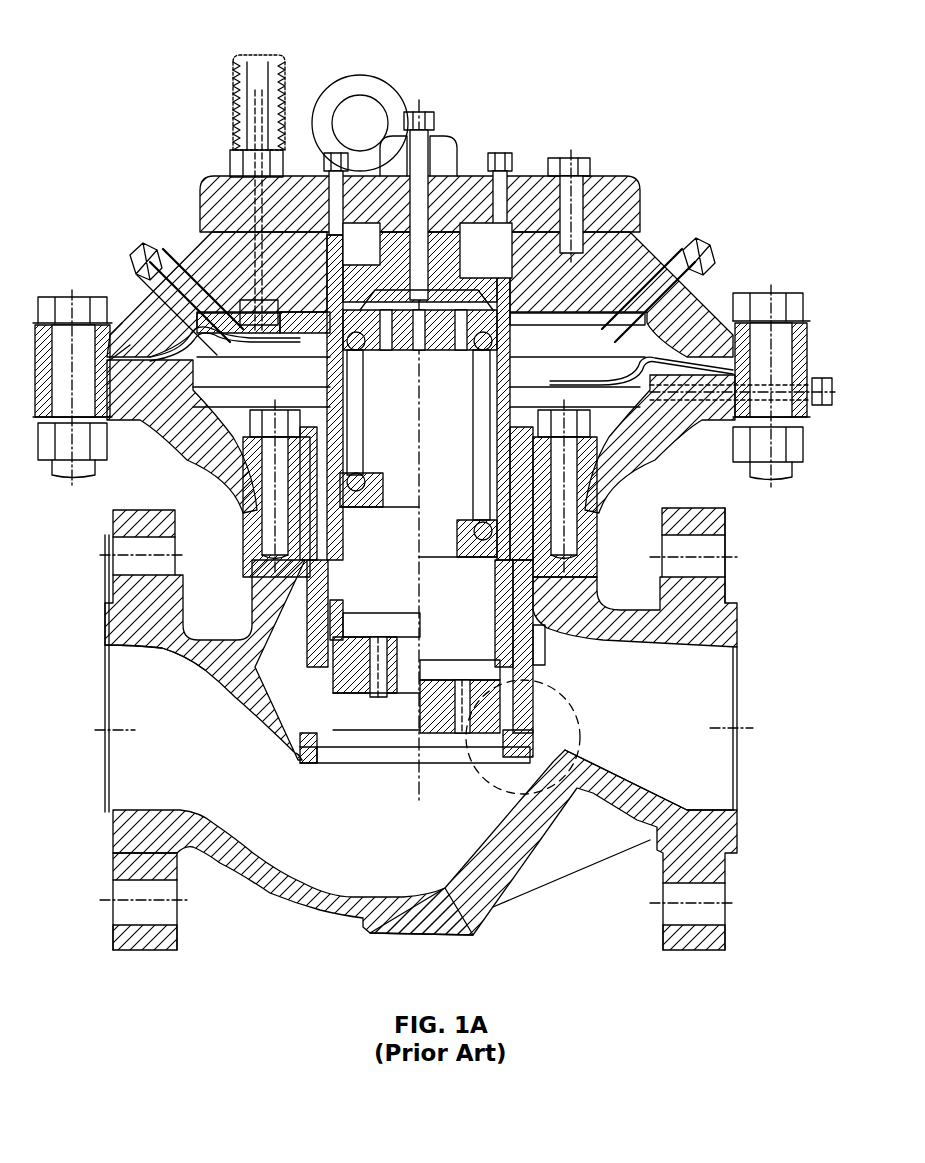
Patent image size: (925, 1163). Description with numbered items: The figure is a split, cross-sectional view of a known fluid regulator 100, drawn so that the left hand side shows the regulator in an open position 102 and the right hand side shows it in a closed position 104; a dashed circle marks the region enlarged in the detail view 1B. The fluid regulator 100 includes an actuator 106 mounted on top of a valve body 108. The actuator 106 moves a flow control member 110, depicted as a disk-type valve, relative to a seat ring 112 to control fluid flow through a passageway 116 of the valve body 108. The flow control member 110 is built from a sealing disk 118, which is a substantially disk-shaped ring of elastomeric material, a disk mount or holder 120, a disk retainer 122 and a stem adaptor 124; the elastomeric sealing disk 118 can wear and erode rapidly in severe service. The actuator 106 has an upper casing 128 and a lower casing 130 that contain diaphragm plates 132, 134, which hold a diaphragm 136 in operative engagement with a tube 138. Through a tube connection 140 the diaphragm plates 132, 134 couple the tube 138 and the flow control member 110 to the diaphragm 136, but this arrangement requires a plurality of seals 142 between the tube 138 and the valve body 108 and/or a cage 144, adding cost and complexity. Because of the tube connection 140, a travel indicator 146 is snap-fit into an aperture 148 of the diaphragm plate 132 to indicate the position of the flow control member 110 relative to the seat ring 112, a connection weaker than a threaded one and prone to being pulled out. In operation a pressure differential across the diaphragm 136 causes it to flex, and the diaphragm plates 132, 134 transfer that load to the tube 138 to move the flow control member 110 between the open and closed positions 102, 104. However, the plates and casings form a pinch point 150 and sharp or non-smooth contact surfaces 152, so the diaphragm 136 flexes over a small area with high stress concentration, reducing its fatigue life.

The fluid regulator 100 is at (665, 58).
The open position 102 is at (345, 790).
The closed position 104 is at (455, 820).
The actuator 106 is at (765, 215).
The valve body 108 is at (320, 905).
The flow control member 110 is at (320, 707).
The seat ring 112 is at (305, 758).
The passageway 116 is at (368, 858).
The sealing disk 118 is at (330, 683).
The disk holder 120 is at (328, 665).
The disk retainer 122 is at (395, 700).
The stem adaptor 124 is at (345, 690).
The upper casing 128 is at (603, 210).
The lower casing 130 is at (165, 445).
The diaphragm plate 132 is at (160, 250).
The diaphragm plate 134 is at (100, 300).
The diaphragm 136 is at (790, 312).
The tube 138 is at (605, 540).
The tube connection 140 is at (705, 265).
The seals 142 is at (650, 240).
The cage 144 is at (548, 655).
The travel indicator 146 is at (257, 55).
The aperture 148 is at (198, 217).
The pinch point 150 is at (150, 312).
The non-smooth contact surfaces 152 is at (135, 290).
The detail area 1B is at (568, 742).